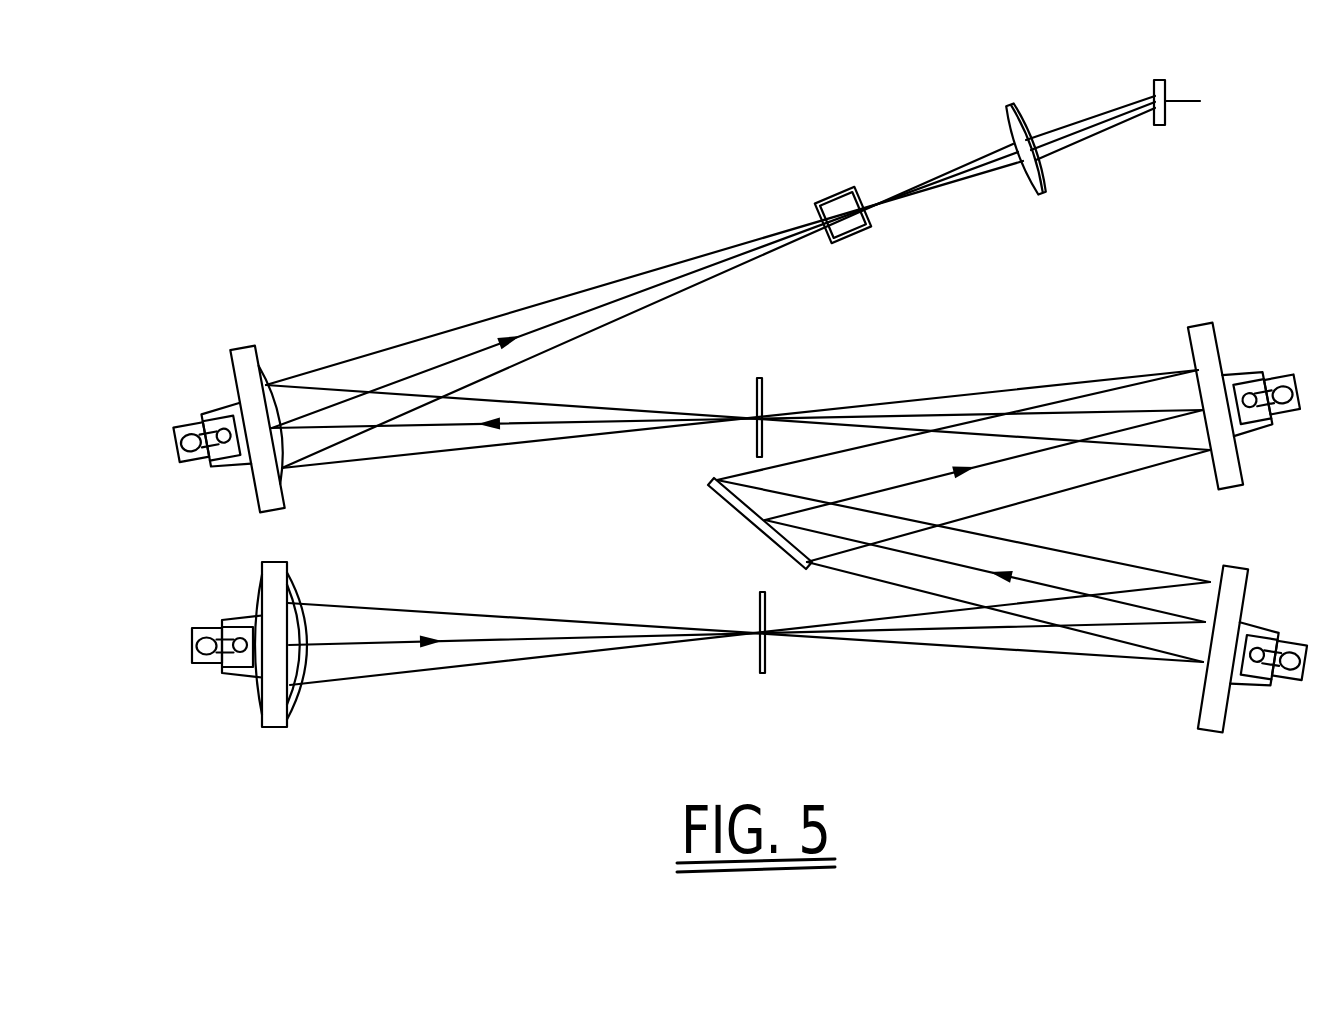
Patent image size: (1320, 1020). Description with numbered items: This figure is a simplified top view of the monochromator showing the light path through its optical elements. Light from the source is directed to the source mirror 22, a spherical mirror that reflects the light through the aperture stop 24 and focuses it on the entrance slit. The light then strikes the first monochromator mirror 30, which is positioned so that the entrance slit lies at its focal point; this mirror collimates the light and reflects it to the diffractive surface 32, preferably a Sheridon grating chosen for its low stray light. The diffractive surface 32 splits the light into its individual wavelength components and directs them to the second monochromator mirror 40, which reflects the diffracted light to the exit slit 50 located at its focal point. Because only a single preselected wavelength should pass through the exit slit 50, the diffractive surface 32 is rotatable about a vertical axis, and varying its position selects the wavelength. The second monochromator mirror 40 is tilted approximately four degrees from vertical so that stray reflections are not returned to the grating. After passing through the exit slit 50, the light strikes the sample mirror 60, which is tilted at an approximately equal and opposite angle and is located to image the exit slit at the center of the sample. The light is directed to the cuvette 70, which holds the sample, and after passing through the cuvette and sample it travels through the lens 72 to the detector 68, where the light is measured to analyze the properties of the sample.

The source mirror 22 is at (280, 718).
The aperture stop 24 is at (766, 652).
The first monochromator mirror 30 is at (1215, 683).
The diffractive surface 32 is at (752, 530).
The second monochromator mirror 40 is at (1208, 360).
The exit slit 50 is at (762, 397).
The sample mirror 60 is at (247, 367).
The detector 68 is at (1165, 90).
The cuvette 70 is at (862, 195).
The lens 72 is at (1028, 118).